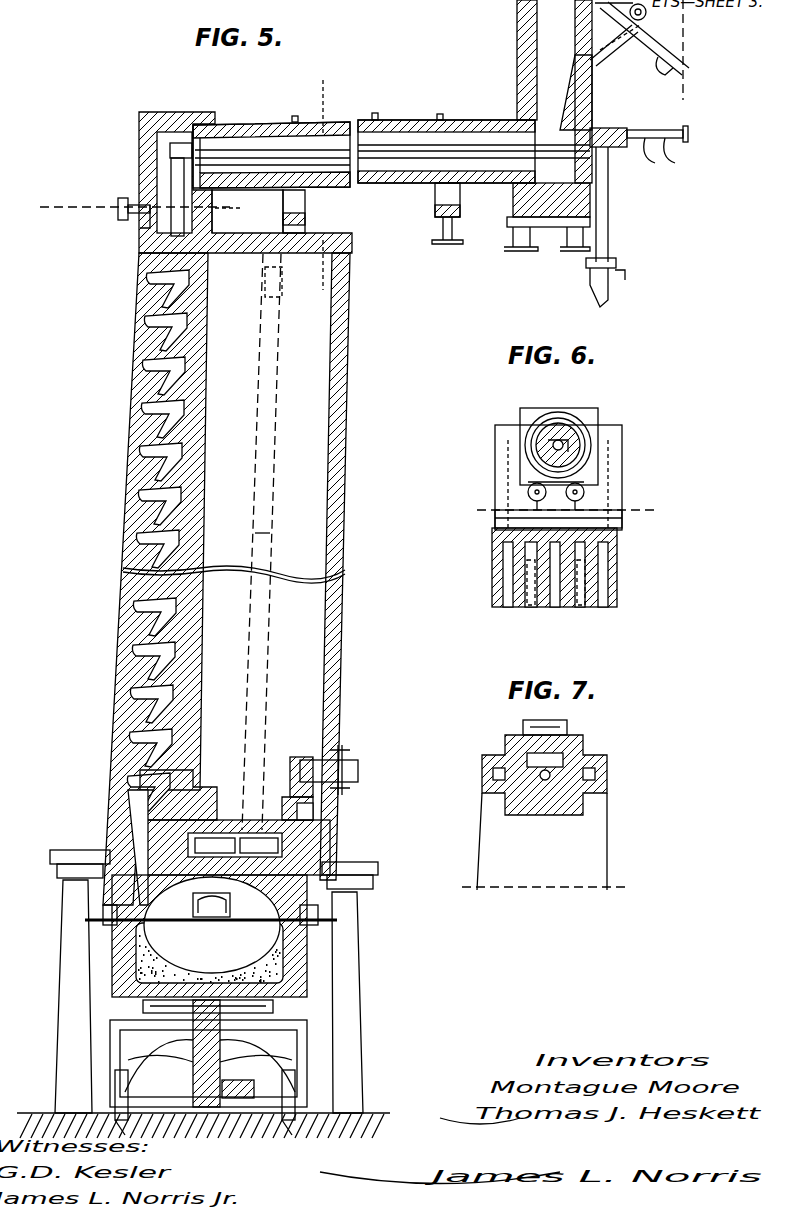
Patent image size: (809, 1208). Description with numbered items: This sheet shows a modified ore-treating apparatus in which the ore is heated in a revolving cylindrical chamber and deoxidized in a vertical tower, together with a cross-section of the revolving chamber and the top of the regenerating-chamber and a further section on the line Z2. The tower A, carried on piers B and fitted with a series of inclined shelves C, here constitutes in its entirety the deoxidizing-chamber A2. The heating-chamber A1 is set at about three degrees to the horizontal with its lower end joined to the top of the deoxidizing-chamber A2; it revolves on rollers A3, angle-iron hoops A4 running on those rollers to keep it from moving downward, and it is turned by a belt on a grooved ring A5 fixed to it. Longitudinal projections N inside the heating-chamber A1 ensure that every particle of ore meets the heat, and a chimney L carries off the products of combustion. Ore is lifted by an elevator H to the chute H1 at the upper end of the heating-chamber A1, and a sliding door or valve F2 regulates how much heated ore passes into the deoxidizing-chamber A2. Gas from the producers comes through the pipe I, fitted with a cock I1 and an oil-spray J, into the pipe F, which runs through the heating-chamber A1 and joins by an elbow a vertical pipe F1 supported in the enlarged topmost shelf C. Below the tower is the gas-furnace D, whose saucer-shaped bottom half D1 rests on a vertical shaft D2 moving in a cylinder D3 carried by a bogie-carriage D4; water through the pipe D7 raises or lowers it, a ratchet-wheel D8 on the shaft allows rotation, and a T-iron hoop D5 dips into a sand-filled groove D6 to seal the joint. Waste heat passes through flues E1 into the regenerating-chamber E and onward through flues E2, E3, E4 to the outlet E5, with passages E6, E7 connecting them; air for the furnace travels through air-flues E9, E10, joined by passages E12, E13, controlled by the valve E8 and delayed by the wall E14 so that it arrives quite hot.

In FIG. 5, the tower A is at (130, 613).
In FIG. 6, the tower A is at (525, 422).
In FIG. 7, the tower A is at (580, 768).
In FIG. 5, the heating-chamber A1 is at (392, 120).
In FIG. 6, the heating-chamber A1 is at (578, 426).
In FIG. 5, the deoxidizing-chamber A2 is at (152, 426).
In FIG. 5, the rollers A3 is at (300, 195).
In FIG. 6, the rollers A3 is at (534, 488).
In FIG. 5, the angle-iron hoops A4 is at (294, 117).
In FIG. 6, the angle-iron hoops A4 is at (528, 455).
In FIG. 5, the grooved ring A5 is at (360, 122).
In FIG. 5, the piers B is at (203, 1009).
In FIG. 5, the shelves C is at (138, 678).
In FIG. 5, the gas-furnace D is at (212, 925).
In FIG. 5, the bottom half of gas-furnace D1 is at (209, 936).
In FIG. 5, the vertical shaft D2 is at (186, 1053).
In FIG. 5, the cylinder D3 is at (250, 1050).
In FIG. 5, the bogie-carriage D4 is at (208, 1063).
In FIG. 5, the hoop of T-iron D5 is at (108, 905).
In FIG. 5, the circular groove D6 is at (120, 922).
In FIG. 5, the pipe D7 is at (205, 1102).
In FIG. 5, the ratchet-wheel D8 is at (185, 1004).
In FIG. 5, the regenerating-chamber E is at (296, 566).
In FIG. 6, the regenerating-chamber E is at (495, 548).
In FIG. 7, the regenerating-chamber E is at (543, 841).
In FIG. 5, the flues E1 is at (366, 902).
In FIG. 6, the flue E2 is at (505, 592).
In FIG. 6, the flue E3 is at (554, 600).
In FIG. 6, the flue E4 is at (608, 595).
In FIG. 5, the outlet E5 is at (168, 150).
In FIG. 7, the outlet E5 is at (482, 775).
In FIG. 5, the passage E6 is at (266, 272).
In FIG. 5, the passage E7 is at (308, 824).
In FIG. 5, the valve E8 is at (348, 773).
In FIG. 6, the air-flue E9 is at (531, 598).
In FIG. 6, the air-flue E10 is at (581, 600).
In FIG. 5, the passage E12 is at (222, 780).
In FIG. 5, the passage E13 is at (300, 762).
In FIG. 5, the wall E14 is at (270, 533).
In FIG. 6, the wall E14 is at (527, 582).
In FIG. 5, the pipe F is at (384, 162).
In FIG. 6, the pipe F is at (565, 452).
In FIG. 7, the pipe F is at (547, 780).
In FIG. 5, the vertical pipe F1 is at (175, 200).
In FIG. 5, the sliding door or valve F2 is at (115, 219).
In FIG. 7, the sliding door or valve F2 is at (523, 727).
In FIG. 5, the elevator H is at (665, 50).
In FIG. 5, the chute H1 is at (639, 42).
In FIG. 5, the pipe I is at (600, 212).
In FIG. 5, the cock I1 is at (608, 285).
In FIG. 5, the oil-spray J is at (639, 154).
In FIG. 5, the chimney L is at (548, 125).
In FIG. 5, the projections N is at (247, 211).
In FIG. 6, the projections N is at (585, 460).
In FIG. 5, the section line Z2 is at (135, 202).
In FIG. 6, the section line Z2 is at (564, 510).